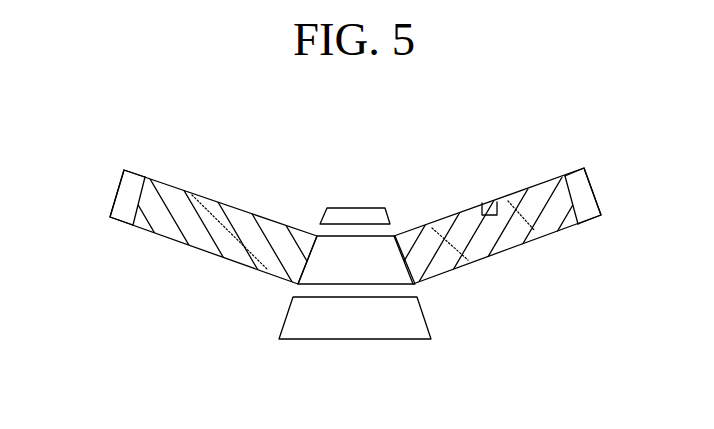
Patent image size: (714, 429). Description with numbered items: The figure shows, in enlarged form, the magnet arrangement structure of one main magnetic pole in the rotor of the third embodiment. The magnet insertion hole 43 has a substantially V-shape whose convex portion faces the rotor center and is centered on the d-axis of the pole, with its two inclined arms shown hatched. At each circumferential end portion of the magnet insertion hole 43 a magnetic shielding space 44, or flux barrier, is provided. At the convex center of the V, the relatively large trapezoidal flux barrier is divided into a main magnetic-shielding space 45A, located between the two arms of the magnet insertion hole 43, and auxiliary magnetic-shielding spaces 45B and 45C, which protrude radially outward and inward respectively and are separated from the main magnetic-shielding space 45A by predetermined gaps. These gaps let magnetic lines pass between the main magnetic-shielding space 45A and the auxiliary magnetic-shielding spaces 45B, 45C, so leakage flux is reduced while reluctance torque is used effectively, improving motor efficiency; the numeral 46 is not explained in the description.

The magnet insertion hole 43 is at (497, 202).
The magnetic shielding space 44 is at (118, 183).
The main magnetic-shielding space 45A is at (327, 243).
The auxiliary magnetic-shielding space 45B is at (365, 207).
The auxiliary magnetic-shielding space 45C is at (354, 323).
The hatched wing portion 46 is at (179, 238).